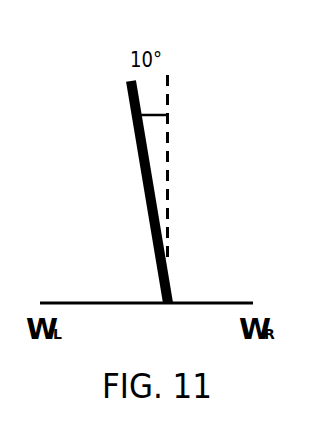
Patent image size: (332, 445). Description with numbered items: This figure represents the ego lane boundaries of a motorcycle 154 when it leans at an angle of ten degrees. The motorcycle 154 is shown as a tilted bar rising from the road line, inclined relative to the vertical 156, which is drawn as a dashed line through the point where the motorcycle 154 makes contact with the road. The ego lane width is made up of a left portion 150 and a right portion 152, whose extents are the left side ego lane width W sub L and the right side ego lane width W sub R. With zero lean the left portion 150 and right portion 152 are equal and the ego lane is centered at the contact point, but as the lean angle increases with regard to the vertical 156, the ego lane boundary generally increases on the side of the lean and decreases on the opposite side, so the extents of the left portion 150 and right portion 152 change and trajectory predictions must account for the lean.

The left portion 150 is at (90, 302).
The right portion 152 is at (238, 302).
The motorcycle 154 is at (133, 132).
The vertical 156 is at (170, 129).